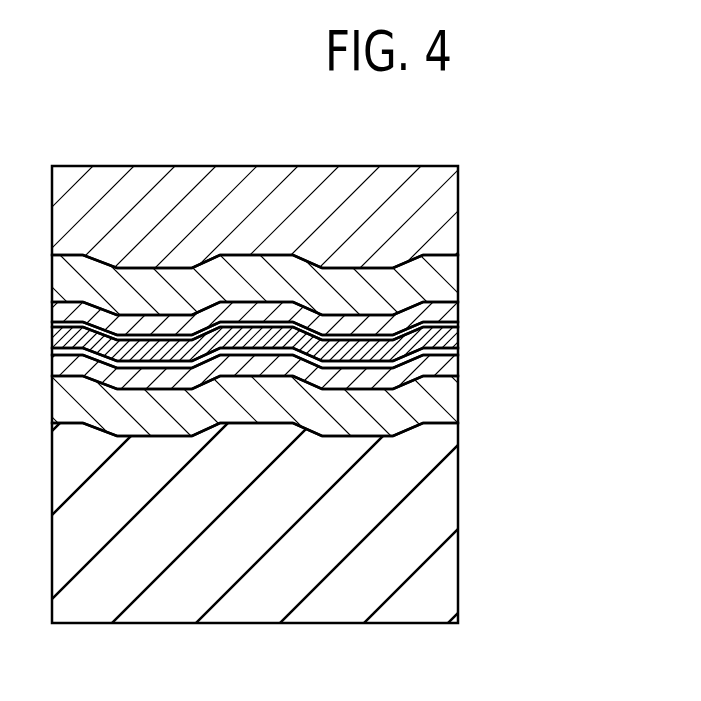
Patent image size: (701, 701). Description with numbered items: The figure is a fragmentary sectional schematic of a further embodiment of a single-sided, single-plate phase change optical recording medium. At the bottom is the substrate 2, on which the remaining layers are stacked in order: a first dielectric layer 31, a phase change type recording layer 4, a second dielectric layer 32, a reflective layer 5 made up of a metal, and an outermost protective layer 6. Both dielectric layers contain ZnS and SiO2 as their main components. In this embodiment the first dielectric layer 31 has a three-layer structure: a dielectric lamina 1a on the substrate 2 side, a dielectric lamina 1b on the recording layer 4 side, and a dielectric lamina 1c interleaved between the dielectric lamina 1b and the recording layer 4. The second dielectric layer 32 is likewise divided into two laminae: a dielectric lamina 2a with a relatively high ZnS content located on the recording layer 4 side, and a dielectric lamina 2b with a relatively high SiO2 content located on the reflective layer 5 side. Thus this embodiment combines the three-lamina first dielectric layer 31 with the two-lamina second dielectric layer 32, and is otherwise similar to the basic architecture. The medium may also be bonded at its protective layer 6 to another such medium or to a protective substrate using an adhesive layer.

The protective layer 6 is at (458, 212).
The reflective layer 5 is at (458, 282).
The dielectric lamina 2b is at (458, 312).
The dielectric lamina 2a is at (458, 325).
The second dielectric layer 32 is at (350, 303).
The phase change type recording layer 4 is at (458, 340).
The dielectric lamina 1c is at (458, 352).
The dielectric lamina 1b is at (458, 368).
The dielectric lamina 1a is at (458, 402).
The first dielectric layer 31 is at (343, 424).
The substrate 2 is at (453, 515).